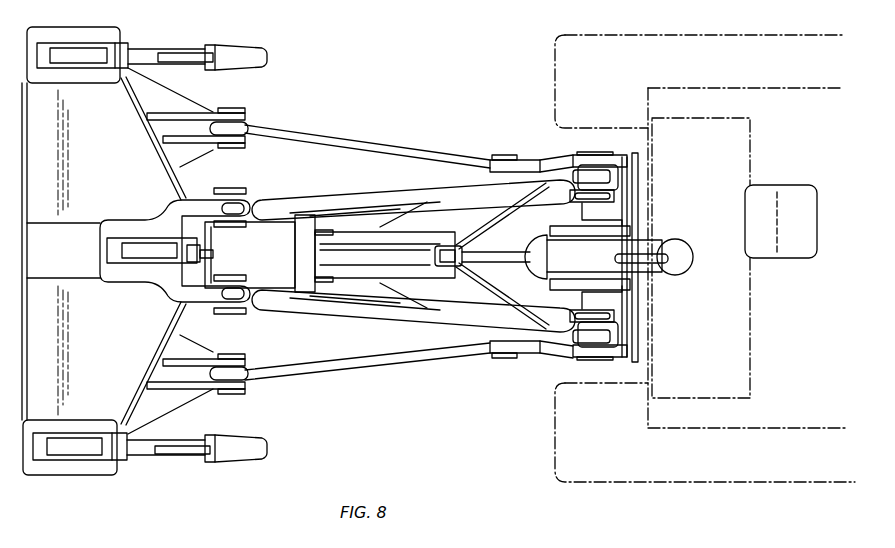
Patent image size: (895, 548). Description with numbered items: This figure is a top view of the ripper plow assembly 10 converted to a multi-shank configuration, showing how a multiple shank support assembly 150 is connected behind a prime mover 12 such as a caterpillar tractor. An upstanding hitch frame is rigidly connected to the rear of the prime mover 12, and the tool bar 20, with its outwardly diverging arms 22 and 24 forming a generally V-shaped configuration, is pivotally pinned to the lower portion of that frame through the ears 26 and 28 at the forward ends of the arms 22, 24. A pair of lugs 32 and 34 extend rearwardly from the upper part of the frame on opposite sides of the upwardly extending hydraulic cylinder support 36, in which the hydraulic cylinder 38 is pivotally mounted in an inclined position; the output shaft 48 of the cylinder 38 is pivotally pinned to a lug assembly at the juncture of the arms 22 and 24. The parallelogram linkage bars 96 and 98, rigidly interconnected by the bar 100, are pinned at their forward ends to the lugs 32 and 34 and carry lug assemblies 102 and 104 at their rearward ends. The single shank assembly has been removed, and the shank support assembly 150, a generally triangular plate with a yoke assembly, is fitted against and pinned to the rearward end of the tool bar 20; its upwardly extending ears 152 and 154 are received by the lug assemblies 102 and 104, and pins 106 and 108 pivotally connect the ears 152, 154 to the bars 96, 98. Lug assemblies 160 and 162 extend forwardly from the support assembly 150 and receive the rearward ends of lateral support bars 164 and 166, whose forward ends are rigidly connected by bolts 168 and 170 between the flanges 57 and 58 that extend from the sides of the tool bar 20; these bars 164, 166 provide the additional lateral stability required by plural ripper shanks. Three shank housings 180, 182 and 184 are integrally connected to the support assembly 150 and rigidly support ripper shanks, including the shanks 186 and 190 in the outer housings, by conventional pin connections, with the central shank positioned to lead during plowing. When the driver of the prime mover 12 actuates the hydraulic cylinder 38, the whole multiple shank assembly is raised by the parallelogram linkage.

The ripper plow assembly 10 is at (305, 77).
The prime mover 12 is at (545, 50).
The tool bar 20 is at (364, 232).
The arm 22 is at (465, 326).
The arm 24 is at (470, 191).
The ear 26 is at (612, 339).
The ear 28 is at (612, 176).
The lug 32 is at (628, 314).
The lug 34 is at (628, 196).
The hydraulic cylinder support 36 is at (628, 226).
The hydraulic cylinder 38 is at (690, 244).
The output shaft 48 is at (508, 253).
The flange 57 is at (525, 153).
The flange 58 is at (528, 360).
The parallelogram linkage bar 96 is at (340, 199).
The parallelogram linkage bar 98 is at (348, 311).
The bar 100 is at (294, 251).
The lug assembly 102 is at (264, 200).
The lug assembly 104 is at (267, 310).
The pin 106 is at (227, 196).
The pin 108 is at (223, 320).
The multiple shank support assembly 150 is at (110, 163).
The ear 152 is at (228, 200).
The ear 154 is at (233, 303).
The lug assembly 160 is at (197, 113).
The lug assembly 162 is at (198, 393).
The lateral support bar 164 is at (408, 148).
The lateral support bar 166 is at (393, 365).
The bolt 168 is at (498, 155).
The bolt 170 is at (505, 362).
The shank housing 180 is at (100, 43).
The shank housing 182 is at (140, 238).
The shank housing 184 is at (68, 457).
The ripper shank 186 is at (190, 47).
The ripper shank 190 is at (180, 453).